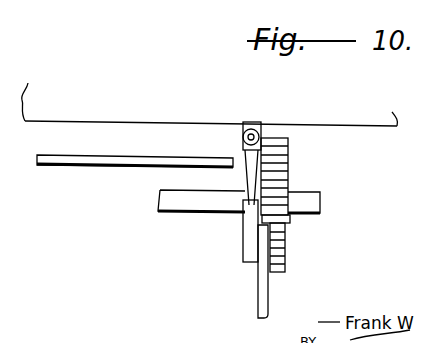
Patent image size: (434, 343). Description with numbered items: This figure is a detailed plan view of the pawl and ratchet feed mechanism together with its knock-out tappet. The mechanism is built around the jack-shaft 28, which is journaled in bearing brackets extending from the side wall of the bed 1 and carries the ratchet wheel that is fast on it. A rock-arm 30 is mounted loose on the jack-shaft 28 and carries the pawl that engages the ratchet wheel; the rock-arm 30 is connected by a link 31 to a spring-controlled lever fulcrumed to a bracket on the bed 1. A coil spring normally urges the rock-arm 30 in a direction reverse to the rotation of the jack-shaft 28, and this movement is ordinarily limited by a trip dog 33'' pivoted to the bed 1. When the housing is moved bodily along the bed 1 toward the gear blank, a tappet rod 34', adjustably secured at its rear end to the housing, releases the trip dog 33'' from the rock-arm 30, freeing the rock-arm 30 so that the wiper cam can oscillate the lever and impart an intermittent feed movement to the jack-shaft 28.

The bed 1 is at (338, 128).
The jack-shaft 28 is at (316, 195).
The rock-arm 30 is at (250, 225).
The link 31 is at (262, 293).
The trip dog 33'' is at (229, 163).
The tappet rod 34' is at (135, 131).